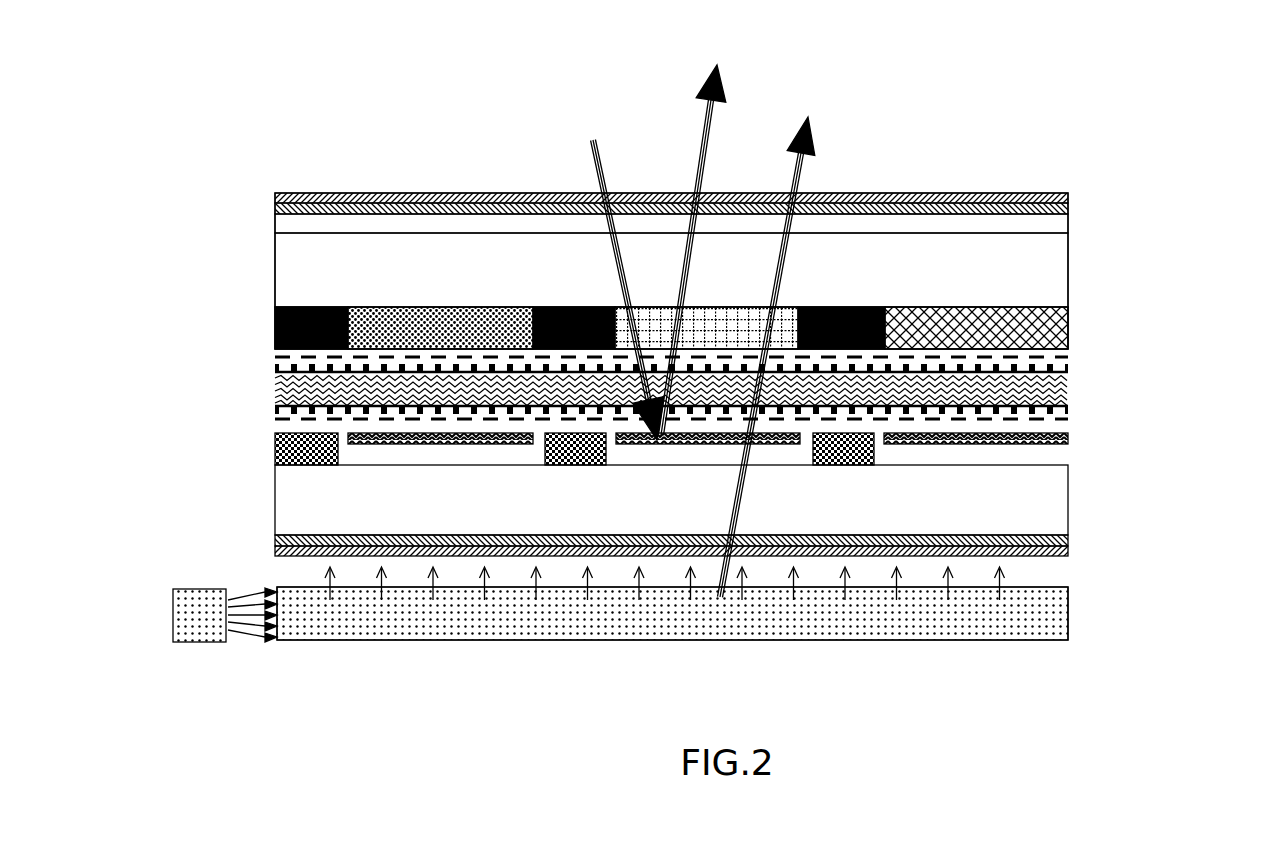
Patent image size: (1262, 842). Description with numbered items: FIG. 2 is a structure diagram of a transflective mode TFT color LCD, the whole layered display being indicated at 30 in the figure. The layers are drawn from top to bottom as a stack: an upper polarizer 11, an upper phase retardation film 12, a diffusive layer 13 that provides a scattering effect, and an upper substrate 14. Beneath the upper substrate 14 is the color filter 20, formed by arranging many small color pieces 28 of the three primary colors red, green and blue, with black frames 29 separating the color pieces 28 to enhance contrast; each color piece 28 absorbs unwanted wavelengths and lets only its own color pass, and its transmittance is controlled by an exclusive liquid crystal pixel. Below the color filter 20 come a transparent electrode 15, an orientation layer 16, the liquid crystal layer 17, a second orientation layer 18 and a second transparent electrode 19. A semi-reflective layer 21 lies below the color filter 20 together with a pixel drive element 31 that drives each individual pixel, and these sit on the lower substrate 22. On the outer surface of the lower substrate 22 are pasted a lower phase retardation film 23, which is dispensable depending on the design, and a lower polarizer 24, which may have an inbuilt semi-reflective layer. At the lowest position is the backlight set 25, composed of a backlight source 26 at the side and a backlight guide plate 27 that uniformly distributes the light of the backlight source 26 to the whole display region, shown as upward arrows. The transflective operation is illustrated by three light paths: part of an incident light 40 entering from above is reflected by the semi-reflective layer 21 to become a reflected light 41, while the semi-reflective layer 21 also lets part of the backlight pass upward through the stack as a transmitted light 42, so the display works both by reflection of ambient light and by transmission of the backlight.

The upper polarizer 11 is at (1070, 191).
The upper phase retardation film 12 is at (1067, 204).
The diffusive layer 13 is at (1062, 220).
The upper substrate 14 is at (1063, 272).
The transparent electrode 15 is at (1063, 353).
The orientation layer 16 is at (1068, 365).
The liquid crystal layer 17 is at (1068, 387).
The orientation layer 18 is at (1068, 407).
The transparent electrode 19 is at (1067, 418).
The color filter 20 is at (1073, 320).
The semi-reflective layer 21 is at (1068, 437).
The lower substrate 22 is at (1063, 490).
The lower phase retardation film 23 is at (1070, 539).
The lower polarizer 24 is at (1070, 549).
The backlight set 25 is at (1070, 607).
The backlight source 26 is at (207, 632).
The backlight guide plate 27 is at (600, 618).
The color pieces 28 is at (997, 305).
The black frames 29 is at (843, 305).
The liquid crystal display panel 30 is at (273, 193).
The pixel drive element 31 is at (843, 462).
The incident light 40 is at (588, 178).
The reflected light 41 is at (715, 138).
The transmitted light 42 is at (815, 172).